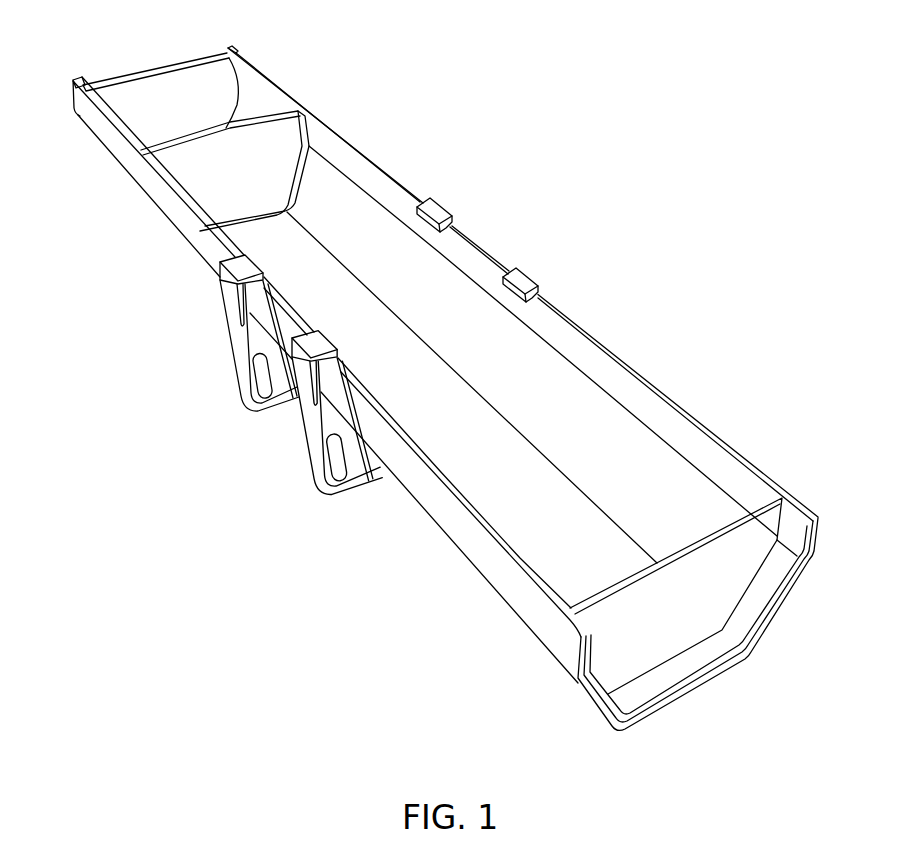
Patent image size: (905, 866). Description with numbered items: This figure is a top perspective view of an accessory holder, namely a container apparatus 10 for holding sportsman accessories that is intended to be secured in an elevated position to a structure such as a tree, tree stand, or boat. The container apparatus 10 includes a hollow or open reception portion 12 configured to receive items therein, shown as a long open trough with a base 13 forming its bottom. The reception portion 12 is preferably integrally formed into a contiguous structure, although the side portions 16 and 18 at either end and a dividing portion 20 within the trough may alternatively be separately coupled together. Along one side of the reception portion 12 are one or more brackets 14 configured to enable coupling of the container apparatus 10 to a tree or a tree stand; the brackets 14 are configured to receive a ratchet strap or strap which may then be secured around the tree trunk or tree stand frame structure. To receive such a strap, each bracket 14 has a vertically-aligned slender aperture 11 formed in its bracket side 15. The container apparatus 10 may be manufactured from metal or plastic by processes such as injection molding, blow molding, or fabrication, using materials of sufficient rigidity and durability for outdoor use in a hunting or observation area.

The container apparatus 10 is at (445, 379).
The slender aperture 11 is at (266, 394).
The reception portion 12 is at (677, 473).
The base 13 is at (505, 496).
The bracket 14 is at (438, 213).
The bracket side 15 is at (242, 348).
The side portion 16 is at (176, 80).
The side portion 18 is at (736, 592).
The dividing portion 20 is at (284, 138).